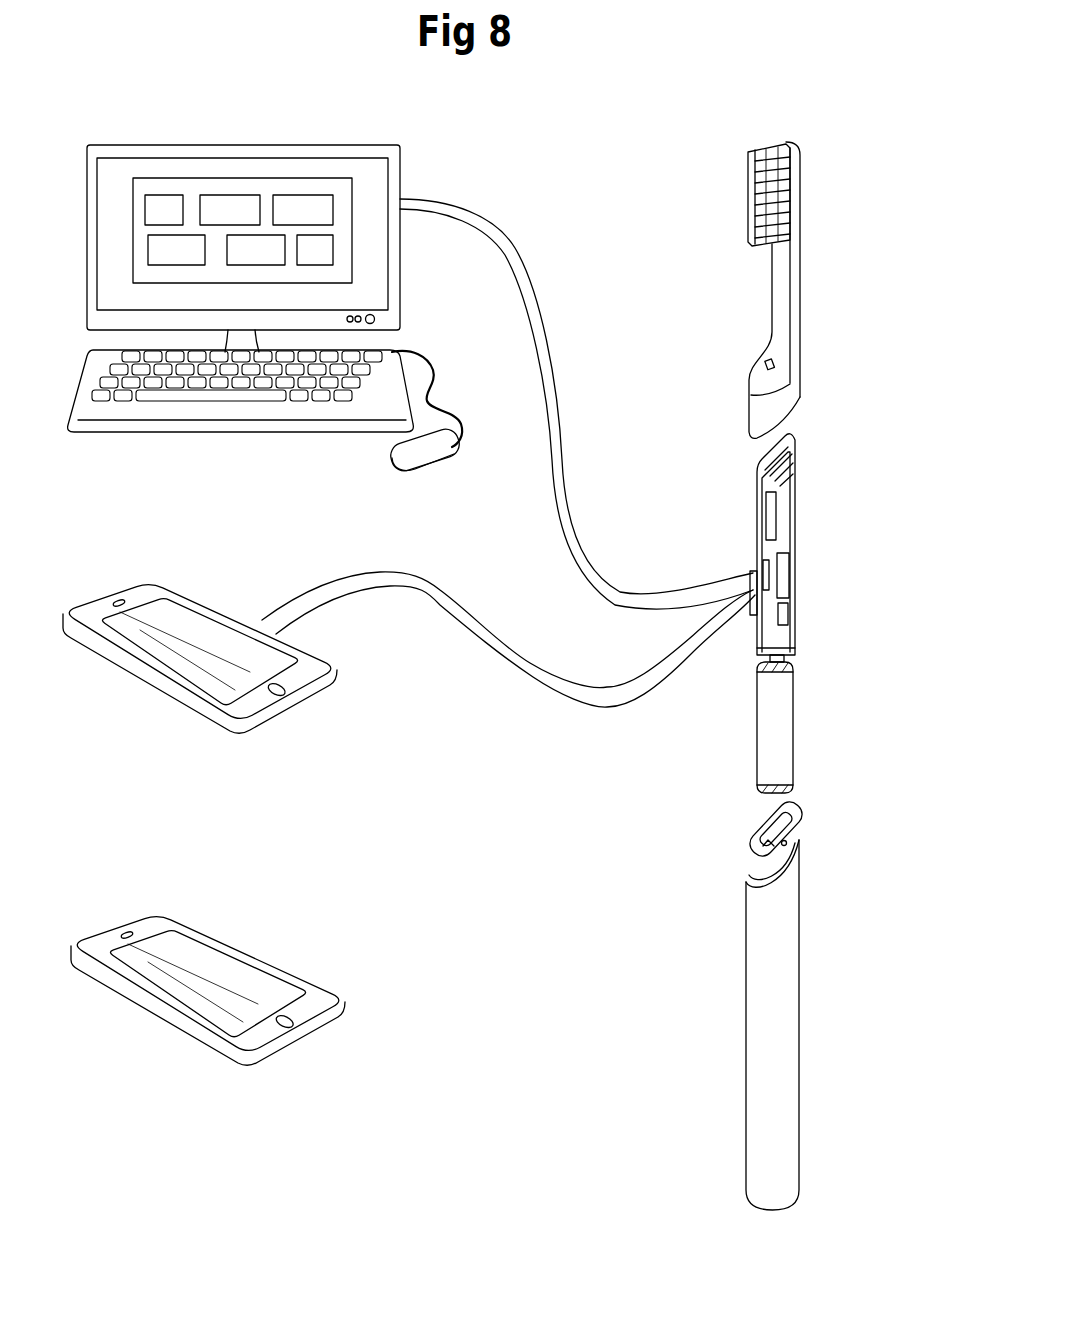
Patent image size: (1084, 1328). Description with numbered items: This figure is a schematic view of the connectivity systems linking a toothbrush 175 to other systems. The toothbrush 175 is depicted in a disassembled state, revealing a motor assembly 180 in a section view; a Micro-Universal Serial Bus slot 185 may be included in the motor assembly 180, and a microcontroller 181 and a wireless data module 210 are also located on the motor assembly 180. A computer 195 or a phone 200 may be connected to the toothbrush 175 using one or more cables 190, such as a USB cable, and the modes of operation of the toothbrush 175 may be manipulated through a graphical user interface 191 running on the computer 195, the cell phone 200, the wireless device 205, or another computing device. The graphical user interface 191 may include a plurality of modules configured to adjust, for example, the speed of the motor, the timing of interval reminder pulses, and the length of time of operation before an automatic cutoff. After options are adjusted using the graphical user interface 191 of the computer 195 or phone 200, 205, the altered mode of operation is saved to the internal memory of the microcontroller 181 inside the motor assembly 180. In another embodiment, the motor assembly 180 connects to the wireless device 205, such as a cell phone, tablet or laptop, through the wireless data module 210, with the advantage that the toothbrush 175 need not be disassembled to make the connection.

The toothbrush 175 is at (777, 888).
The motor assembly 180 is at (790, 540).
The microcontroller 181 is at (793, 570).
The Micro-Universal Serial Bus (USB) slot 185 is at (733, 567).
The cable 190 is at (550, 452).
The graphical user interface (GUI) 191 is at (298, 178).
The computer 195 is at (400, 171).
The phone 200 is at (314, 648).
The wireless device 205 is at (313, 980).
The wireless data module 210 is at (795, 590).